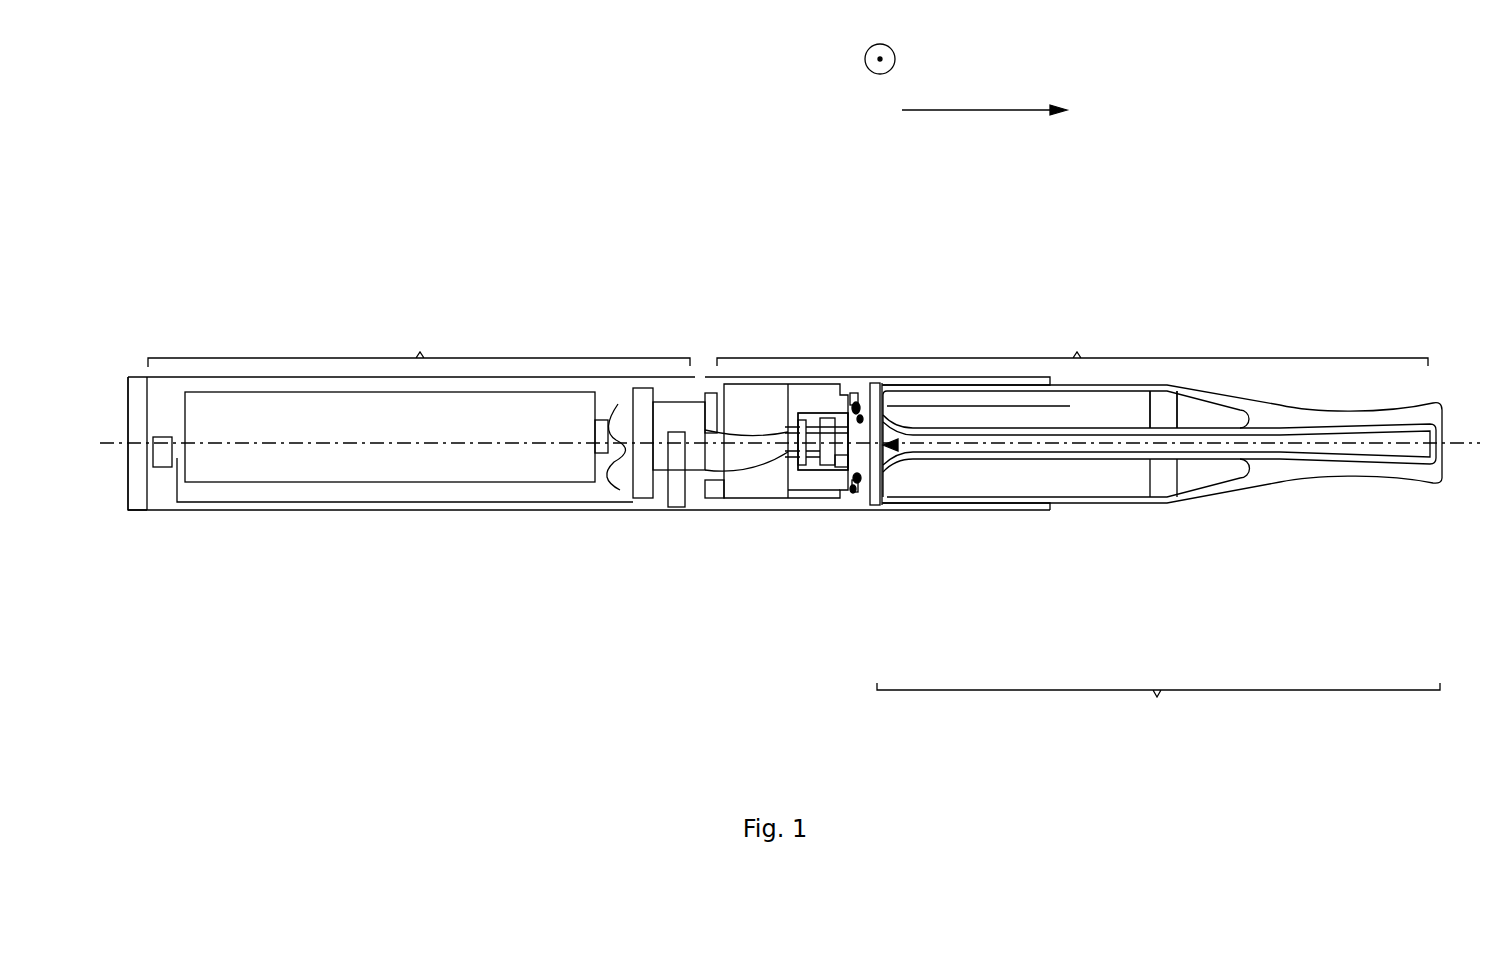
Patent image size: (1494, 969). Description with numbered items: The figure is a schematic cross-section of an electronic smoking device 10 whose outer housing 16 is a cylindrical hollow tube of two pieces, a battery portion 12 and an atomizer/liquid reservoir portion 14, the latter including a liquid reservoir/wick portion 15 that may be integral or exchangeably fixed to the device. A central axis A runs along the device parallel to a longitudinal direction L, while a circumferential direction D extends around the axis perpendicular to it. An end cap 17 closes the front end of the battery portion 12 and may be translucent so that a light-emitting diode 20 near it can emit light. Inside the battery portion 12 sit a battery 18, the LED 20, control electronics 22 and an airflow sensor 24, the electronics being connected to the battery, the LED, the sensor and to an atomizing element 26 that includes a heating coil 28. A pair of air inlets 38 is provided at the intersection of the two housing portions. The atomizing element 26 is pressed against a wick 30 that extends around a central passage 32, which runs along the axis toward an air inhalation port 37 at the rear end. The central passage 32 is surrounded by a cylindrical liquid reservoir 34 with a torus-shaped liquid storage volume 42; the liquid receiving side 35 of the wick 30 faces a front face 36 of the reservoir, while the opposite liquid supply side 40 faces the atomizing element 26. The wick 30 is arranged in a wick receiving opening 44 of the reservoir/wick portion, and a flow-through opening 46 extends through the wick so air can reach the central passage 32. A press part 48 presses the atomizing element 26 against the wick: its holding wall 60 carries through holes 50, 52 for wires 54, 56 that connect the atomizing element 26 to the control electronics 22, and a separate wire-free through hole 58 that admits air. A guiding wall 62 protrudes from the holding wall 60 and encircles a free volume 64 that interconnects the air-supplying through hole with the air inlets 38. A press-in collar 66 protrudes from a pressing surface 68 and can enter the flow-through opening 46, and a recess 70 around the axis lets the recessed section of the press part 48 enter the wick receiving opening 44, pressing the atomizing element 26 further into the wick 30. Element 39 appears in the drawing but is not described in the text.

The electronic smoking device 10 is at (318, 320).
The battery portion 12 is at (409, 416).
The atomizer/liquid reservoir portion 14 is at (1072, 412).
The liquid reservoir/wick portion 15 is at (1158, 708).
The outer housing 16 is at (1000, 510).
The end cap 17 is at (137, 508).
The battery 18 is at (348, 470).
The light-emitting diode (LED) 20 is at (162, 468).
The control electronics 22 is at (633, 388).
The airflow sensor 24 is at (673, 500).
The atomizing element 26 is at (857, 254).
The heating coil 28 is at (872, 383).
The wick 30 is at (873, 505).
The central passage 32 is at (1105, 456).
The liquid reservoir 34 is at (1112, 406).
The liquid receiving side 35 is at (898, 410).
The front face 36 is at (920, 428).
The air inhalation port 37 is at (1450, 430).
The air inlets 38 is at (724, 384).
The wick 39 is at (1072, 406).
The liquid supply side 40 is at (858, 492).
The liquid storage volume 42 is at (1062, 480).
The wick receiving opening 44 is at (843, 477).
The flow-through opening 46 is at (892, 447).
The press part 48 is at (690, 507).
The through hole 50 is at (774, 427).
The through hole 52 is at (800, 470).
The wire 54 is at (680, 390).
The wire 56 is at (640, 388).
The separate through hole 58 is at (705, 498).
The holding wall 60 is at (775, 498).
The guiding wall 62 is at (742, 392).
The free volume 64 is at (745, 456).
The press-in collar 66 is at (860, 406).
The pressing surface 68 is at (853, 484).
The recess 70 is at (855, 393).
The central axis A is at (105, 438).
The circumferential direction D is at (894, 49).
The longitudinal direction L is at (990, 110).